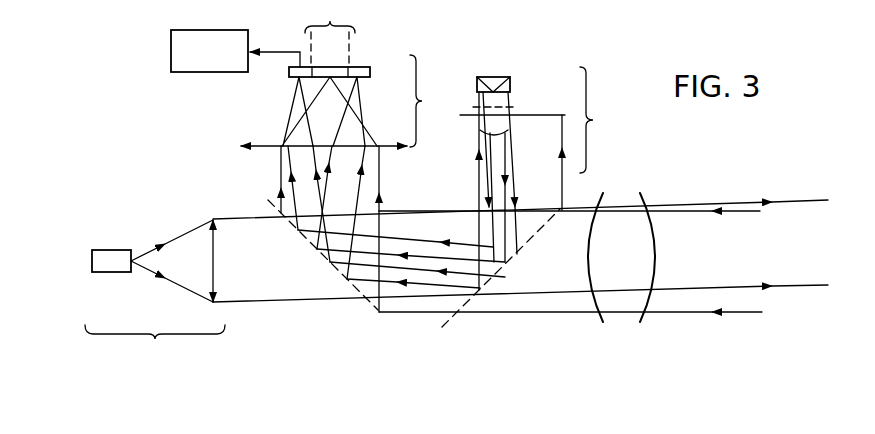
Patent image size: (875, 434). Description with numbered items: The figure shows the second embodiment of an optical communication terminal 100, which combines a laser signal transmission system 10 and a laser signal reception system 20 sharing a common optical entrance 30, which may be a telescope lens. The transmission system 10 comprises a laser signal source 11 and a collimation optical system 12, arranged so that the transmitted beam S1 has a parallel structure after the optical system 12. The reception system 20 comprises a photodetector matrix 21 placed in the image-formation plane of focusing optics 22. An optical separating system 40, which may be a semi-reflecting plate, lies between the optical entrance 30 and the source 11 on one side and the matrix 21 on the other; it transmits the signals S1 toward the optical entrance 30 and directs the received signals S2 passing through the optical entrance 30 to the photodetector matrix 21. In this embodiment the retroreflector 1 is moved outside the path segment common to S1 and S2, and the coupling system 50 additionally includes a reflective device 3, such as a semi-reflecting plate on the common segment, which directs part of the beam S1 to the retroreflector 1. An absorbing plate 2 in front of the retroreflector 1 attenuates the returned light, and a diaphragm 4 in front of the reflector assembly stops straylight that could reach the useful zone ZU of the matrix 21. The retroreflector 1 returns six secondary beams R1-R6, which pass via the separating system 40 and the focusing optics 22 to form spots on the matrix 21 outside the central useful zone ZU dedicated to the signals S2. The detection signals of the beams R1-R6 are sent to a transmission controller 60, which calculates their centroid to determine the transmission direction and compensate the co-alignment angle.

The optical communication terminal 100 is at (110, 110).
The laser signal transmission system 10 is at (155, 291).
The laser signal source 11 is at (110, 272).
The collimation optical system 12 is at (207, 268).
The laser signal reception system 20 is at (503, 156).
The photodetector matrix 21 is at (363, 66).
The focusing optics 22 is at (270, 145).
The optical entrance 30 is at (643, 197).
The optical separating system 40 is at (380, 321).
The coupling system 50 is at (542, 164).
The retroreflector 1 is at (494, 77).
The absorbing plate 2 is at (518, 104).
The reflective device 3 is at (568, 203).
The diaphragm 4 is at (532, 114).
The transmission controller 60 is at (171, 53).
The transmitted laser beam S1 is at (234, 217).
The received laser beam S2 is at (368, 130).
The useful zone ZU is at (330, 33).
The secondary beams R1-R6 is at (487, 133).